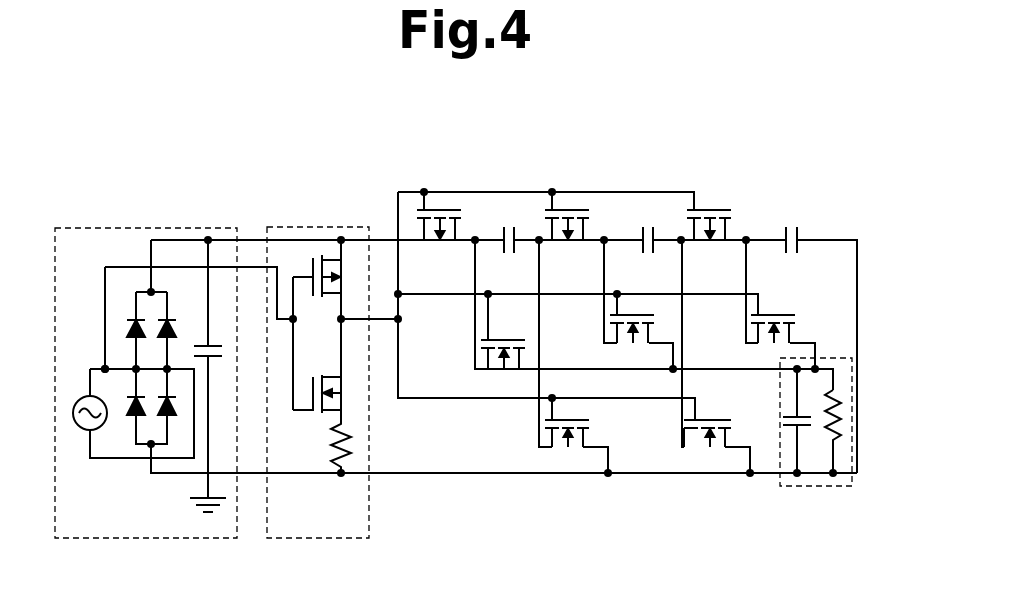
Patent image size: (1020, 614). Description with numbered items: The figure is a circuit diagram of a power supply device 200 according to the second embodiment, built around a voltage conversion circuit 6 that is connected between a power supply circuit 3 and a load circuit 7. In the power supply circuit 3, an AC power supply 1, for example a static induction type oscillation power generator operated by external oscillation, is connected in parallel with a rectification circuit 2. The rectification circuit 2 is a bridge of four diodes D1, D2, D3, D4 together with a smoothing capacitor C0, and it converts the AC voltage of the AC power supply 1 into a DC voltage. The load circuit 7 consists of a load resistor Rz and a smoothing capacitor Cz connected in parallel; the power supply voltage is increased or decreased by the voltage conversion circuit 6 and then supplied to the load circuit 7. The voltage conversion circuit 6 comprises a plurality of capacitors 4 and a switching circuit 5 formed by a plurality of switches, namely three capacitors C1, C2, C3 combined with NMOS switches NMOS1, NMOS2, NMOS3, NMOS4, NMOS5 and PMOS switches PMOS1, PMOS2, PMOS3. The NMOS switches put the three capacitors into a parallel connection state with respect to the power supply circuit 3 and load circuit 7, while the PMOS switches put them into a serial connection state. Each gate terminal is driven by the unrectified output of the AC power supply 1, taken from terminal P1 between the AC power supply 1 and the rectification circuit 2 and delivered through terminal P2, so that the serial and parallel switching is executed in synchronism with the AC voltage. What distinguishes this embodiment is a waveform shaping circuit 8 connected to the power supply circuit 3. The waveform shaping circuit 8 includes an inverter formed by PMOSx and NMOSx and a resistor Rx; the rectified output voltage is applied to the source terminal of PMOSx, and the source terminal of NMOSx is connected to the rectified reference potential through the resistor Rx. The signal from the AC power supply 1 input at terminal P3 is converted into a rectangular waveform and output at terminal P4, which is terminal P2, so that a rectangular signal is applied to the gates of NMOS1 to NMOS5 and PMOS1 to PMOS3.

The power supply device 200 is at (800, 106).
The AC power supply 1 is at (81, 429).
The rectification circuit 2 is at (233, 225).
The power supply circuit 3 is at (150, 540).
The capacitors 4 is at (805, 175).
The switching circuit 5 is at (625, 301).
The voltage conversion circuit 6 is at (805, 137).
The load circuit 7 is at (812, 488).
The waveform shaping circuit 8 is at (318, 540).
The terminal P1 is at (105, 368).
The terminal P2 is at (401, 322).
The terminal P3 is at (293, 322).
The terminal P4 is at (343, 322).
The diode D1 is at (129, 316).
The diode D2 is at (173, 316).
The diode D3 is at (173, 419).
The diode D4 is at (129, 419).
The smoothing capacitor C0 is at (210, 374).
The capacitor C1 is at (791, 253).
The capacitor C2 is at (648, 253).
The capacitor C3 is at (508, 253).
The element PMOSx is at (340, 277).
The element NMOSx is at (340, 394).
The resistor Rx is at (328, 448).
The PMOS switch PMOS1 is at (708, 229).
The PMOS switch PMOS2 is at (568, 229).
The PMOS switch PMOS3 is at (438, 229).
The NMOS switch NMOS1 is at (787, 315).
The NMOS switch NMOS2 is at (631, 332).
The NMOS switch NMOS3 is at (708, 446).
The NMOS switch NMOS4 is at (503, 344).
The NMOS switch NMOS5 is at (567, 435).
The load resistor Rz is at (824, 432).
The smoothing capacitor Cz is at (801, 423).